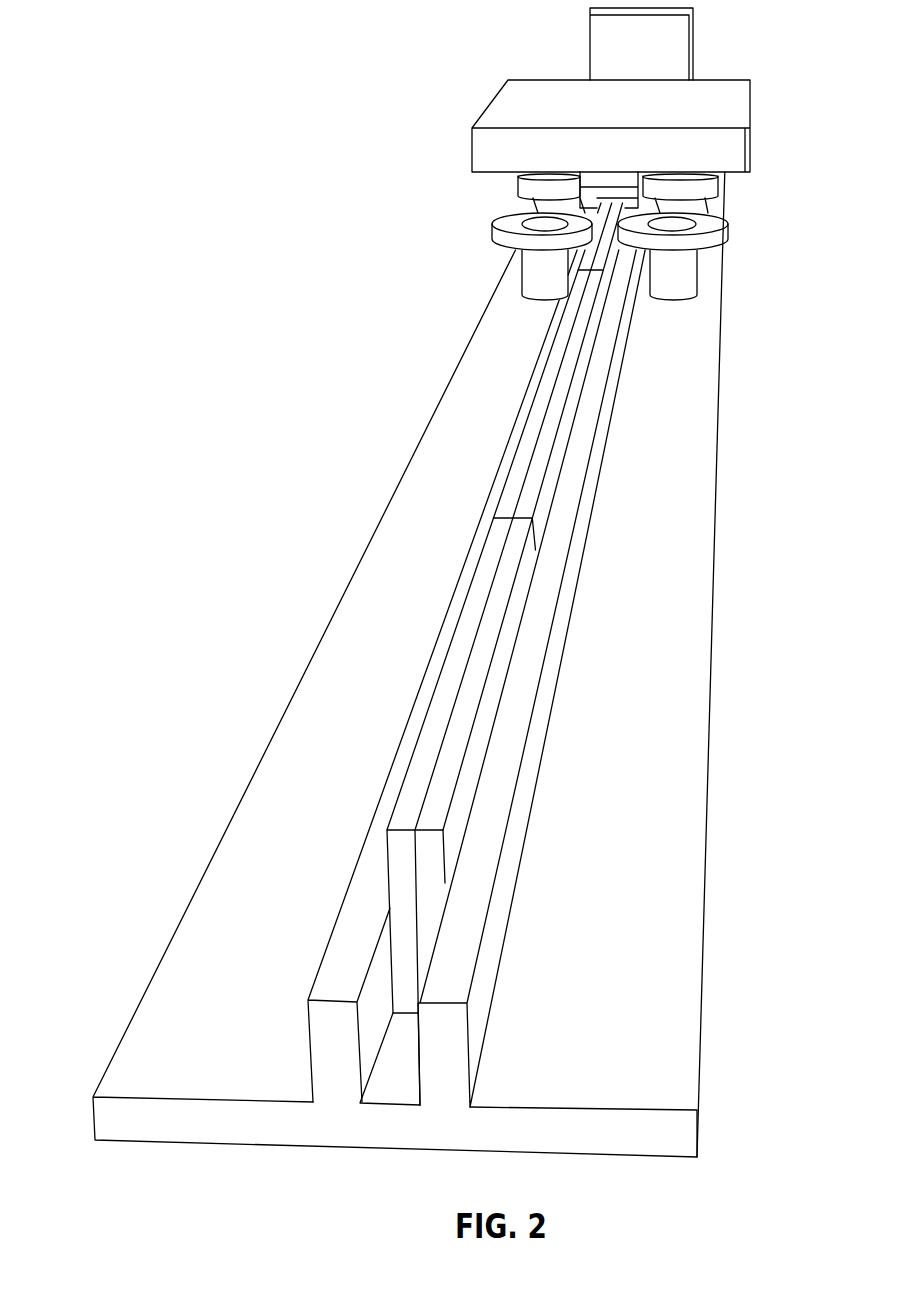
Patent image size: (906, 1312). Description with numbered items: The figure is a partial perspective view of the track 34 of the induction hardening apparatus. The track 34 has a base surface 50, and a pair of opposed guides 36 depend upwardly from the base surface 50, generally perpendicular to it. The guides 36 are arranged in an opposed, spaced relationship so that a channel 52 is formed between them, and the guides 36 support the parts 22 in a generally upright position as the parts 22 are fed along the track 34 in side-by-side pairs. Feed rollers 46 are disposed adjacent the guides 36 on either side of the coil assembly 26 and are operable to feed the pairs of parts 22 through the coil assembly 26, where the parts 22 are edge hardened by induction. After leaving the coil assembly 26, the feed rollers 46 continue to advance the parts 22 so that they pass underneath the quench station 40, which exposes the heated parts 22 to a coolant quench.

The parts 22 is at (533, 420).
The coil assembly 26 is at (495, 100).
The track 34 is at (170, 1021).
The guides 36 is at (363, 900).
The quench station 40 is at (590, 18).
The feed rollers 46 is at (518, 186).
The base surface 50 is at (618, 1075).
The channel 52 is at (383, 1098).